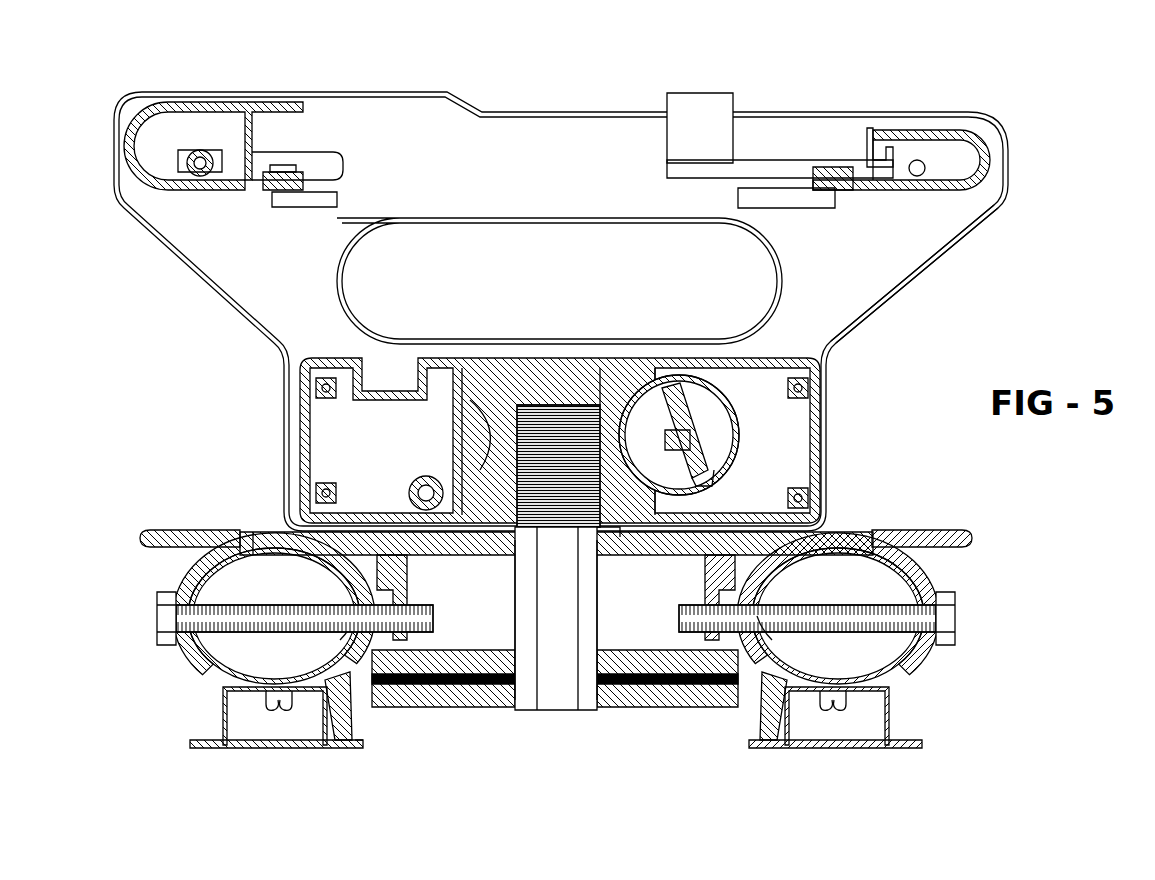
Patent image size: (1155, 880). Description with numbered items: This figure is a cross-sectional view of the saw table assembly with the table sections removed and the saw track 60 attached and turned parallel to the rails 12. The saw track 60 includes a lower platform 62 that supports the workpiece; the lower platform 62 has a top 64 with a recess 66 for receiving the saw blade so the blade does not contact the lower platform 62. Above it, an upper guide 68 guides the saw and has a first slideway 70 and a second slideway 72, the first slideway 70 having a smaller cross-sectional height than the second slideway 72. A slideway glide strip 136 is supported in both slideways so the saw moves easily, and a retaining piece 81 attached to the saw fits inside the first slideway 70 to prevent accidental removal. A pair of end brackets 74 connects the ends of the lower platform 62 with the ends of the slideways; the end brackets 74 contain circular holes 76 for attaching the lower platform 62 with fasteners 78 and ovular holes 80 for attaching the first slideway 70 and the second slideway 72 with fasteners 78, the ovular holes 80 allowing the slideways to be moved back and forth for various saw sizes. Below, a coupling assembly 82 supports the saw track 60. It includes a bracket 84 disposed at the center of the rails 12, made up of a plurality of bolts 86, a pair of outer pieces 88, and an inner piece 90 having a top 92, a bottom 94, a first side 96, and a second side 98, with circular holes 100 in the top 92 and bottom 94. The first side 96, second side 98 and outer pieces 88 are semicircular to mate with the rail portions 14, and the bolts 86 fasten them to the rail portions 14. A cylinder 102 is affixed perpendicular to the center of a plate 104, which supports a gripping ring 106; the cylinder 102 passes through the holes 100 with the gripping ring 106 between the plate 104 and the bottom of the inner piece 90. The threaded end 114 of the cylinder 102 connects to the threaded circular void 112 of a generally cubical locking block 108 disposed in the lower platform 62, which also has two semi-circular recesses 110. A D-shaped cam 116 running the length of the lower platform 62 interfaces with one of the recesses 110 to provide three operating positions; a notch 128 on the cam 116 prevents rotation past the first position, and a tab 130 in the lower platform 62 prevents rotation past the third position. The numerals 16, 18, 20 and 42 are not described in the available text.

The rails 12 is at (221, 690).
The rail portions 14 is at (197, 645).
The foot plate 16 is at (237, 750).
The tube 18 is at (240, 555).
The mounting plate 20 is at (250, 532).
The clamp ring 42 is at (400, 645).
The saw track 60 is at (550, 106).
The lower platform 62 is at (505, 356).
The top 64 is at (780, 360).
The recess 66 is at (393, 385).
The upper guide 68 is at (1006, 148).
The first slideway 70 is at (875, 150).
The second slideway 72 is at (290, 120).
The end brackets 74 is at (930, 275).
The circular holes 76 is at (318, 388).
The fasteners 78 is at (320, 396).
The ovular holes 80 is at (337, 197).
The retaining piece 81 is at (716, 92).
The coupling assembly 82 is at (546, 714).
The bracket 84 is at (950, 583).
The bolts 86 is at (160, 614).
The outer pieces 88 is at (160, 532).
The inner piece 90 is at (383, 750).
The top 92 is at (300, 527).
The bottom 94 is at (350, 721).
The first side 96 is at (757, 642).
The second side 98 is at (345, 635).
The circular holes 100 is at (525, 657).
The cylinder 102 is at (600, 598).
The plate 104 is at (630, 708).
The gripping ring 106 is at (768, 690).
The locking block 108 is at (622, 372).
The semi-circular recesses 110 is at (588, 410).
The threaded circular void 112 is at (620, 538).
The threaded end 114 is at (550, 410).
The cam 116 is at (710, 430).
The notch 128 is at (722, 470).
The tab 130 is at (700, 378).
The slideway glide strip 136 is at (284, 170).